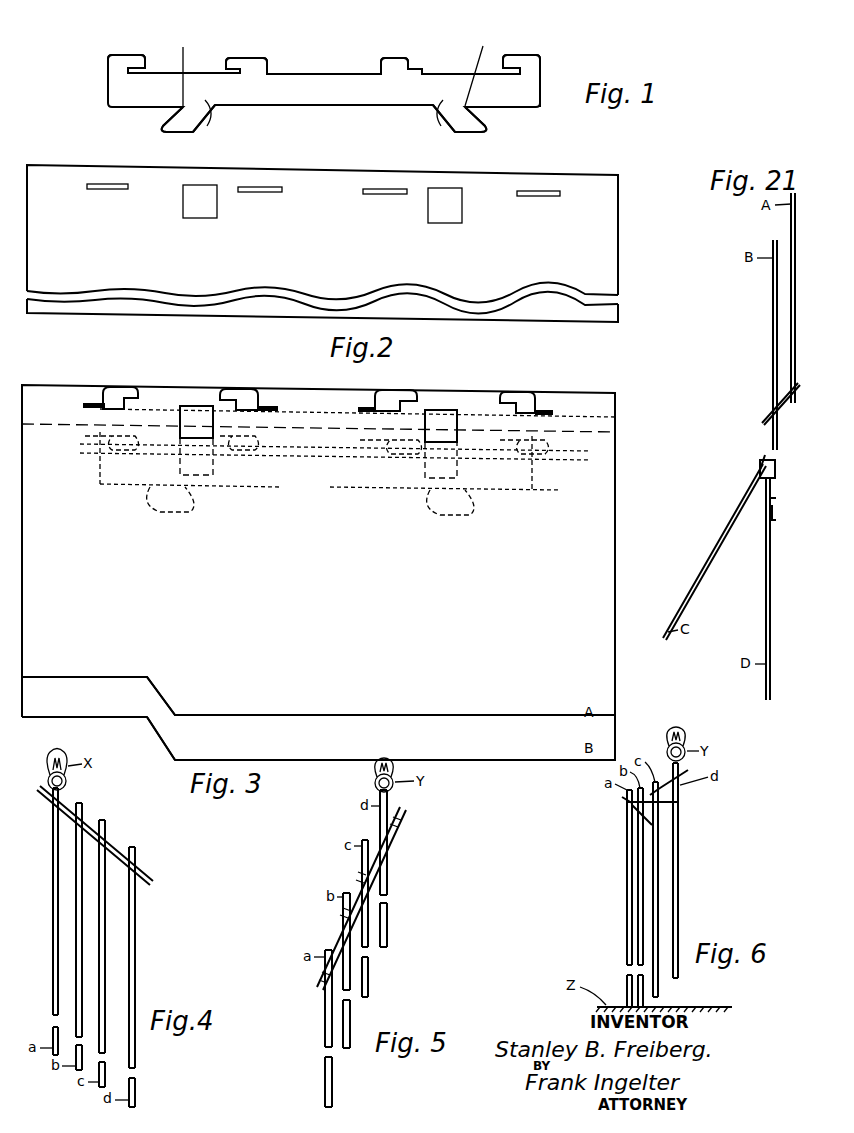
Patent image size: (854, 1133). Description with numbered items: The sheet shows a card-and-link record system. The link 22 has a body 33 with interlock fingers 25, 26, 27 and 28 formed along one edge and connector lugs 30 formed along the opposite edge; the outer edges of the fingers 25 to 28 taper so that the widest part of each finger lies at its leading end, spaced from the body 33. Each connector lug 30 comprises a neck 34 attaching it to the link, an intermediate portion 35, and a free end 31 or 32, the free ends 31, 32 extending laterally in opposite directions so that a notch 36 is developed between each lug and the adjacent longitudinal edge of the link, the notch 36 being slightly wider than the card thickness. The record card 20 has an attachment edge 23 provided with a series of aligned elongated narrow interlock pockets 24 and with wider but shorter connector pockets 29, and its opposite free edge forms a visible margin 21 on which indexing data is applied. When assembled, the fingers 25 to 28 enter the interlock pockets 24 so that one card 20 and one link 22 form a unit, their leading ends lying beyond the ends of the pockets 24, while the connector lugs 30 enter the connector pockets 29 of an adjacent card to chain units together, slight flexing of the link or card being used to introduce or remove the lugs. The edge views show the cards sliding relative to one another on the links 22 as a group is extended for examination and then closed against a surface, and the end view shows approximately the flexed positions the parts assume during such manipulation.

In FIG. 2, the record card 20 is at (532, 283).
In FIG. 21, the record card 20 is at (773, 330).
In FIG. 3, the visible margin 21 is at (553, 748).
In FIG. 1, the link 22 is at (108, 95).
In FIG. 21, the link 22 is at (770, 468).
In FIG. 2, the attachment edge 23 is at (322, 245).
In FIG. 3, the attachment edge 23 is at (615, 396).
In FIG. 2, the interlock pocket 24 is at (108, 184).
In FIG. 3, the interlock pocket 24 is at (274, 406).
In FIG. 1, the interlock finger 25 is at (142, 54).
In FIG. 3, the interlock finger 25 is at (510, 397).
In FIG. 1, the interlock finger 26 is at (233, 58).
In FIG. 1, the interlock finger 27 is at (408, 58).
In FIG. 1, the interlock finger 28 is at (511, 55).
In FIG. 2, the connector pocket 29 is at (203, 193).
In FIG. 3, the connector pocket 29 is at (195, 406).
In FIG. 1, the connector lug 30 is at (176, 133).
In FIG. 4, the connector lug 30 is at (148, 900).
In FIG. 5, the connector lug 30 is at (396, 815).
In FIG. 1, the free end of connector lug 31 is at (488, 128).
In FIG. 1, the free end of connector lug 32 is at (160, 125).
In FIG. 1, the body of link 33 is at (326, 86).
In FIG. 1, the neck 34 is at (218, 115).
In FIG. 1, the intermediate portion of connector lug 35 is at (209, 122).
In FIG. 1, the notch 36 is at (331, 67).